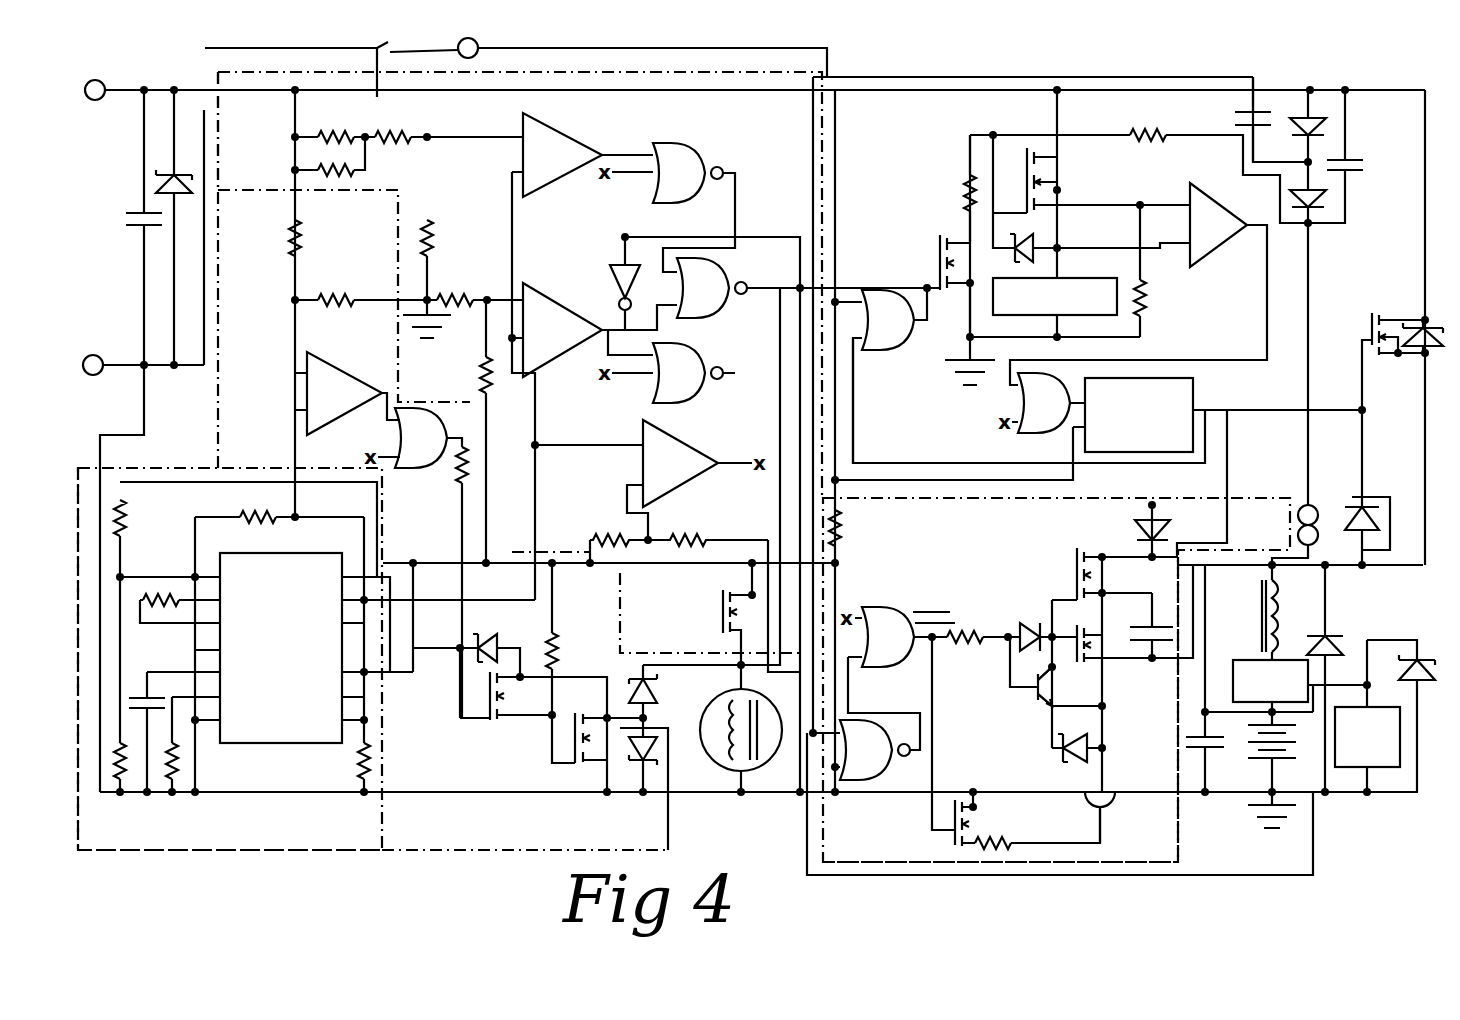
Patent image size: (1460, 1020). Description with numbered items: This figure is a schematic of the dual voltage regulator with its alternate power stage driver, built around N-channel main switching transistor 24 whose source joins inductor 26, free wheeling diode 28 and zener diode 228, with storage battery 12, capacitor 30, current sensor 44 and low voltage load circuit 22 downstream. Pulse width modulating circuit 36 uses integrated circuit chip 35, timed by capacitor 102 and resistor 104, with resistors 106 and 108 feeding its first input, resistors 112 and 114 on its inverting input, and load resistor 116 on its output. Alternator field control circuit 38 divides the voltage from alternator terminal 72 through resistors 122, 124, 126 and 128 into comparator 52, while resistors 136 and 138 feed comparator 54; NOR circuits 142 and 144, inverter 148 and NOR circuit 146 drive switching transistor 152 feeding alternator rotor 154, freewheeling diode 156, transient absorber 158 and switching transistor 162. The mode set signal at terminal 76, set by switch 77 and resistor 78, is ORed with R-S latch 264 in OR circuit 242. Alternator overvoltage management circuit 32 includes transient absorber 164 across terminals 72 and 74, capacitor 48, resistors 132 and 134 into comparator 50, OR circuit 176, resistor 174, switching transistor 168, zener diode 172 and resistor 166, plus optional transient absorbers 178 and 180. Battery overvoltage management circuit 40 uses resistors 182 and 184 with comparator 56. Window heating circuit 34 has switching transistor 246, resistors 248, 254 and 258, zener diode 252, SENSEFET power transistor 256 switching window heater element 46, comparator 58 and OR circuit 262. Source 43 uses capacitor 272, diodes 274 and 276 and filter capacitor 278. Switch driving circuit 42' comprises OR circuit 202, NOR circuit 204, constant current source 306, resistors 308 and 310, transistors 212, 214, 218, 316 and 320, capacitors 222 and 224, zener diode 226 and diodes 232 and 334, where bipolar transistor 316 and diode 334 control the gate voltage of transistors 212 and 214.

The storage battery 12 is at (1262, 757).
The low voltage load circuit 22 is at (1350, 770).
The main switching transistor 24 is at (1395, 366).
The inductor 26 is at (1258, 600).
The free wheeling diode 28 is at (1333, 635).
The capacitor 30 is at (1195, 755).
The alternator overvoltage management circuit 32 is at (562, 553).
The window heating element control and resistance sensing circuit 34 is at (938, 131).
The integrated circuit chip 35 is at (285, 745).
The pulse width modulating circuit 36 is at (372, 848).
The alternator field control circuit 38 is at (215, 74).
The battery overvoltage management circuit 40 is at (778, 466).
The switch driving circuit 42' is at (1041, 709).
The source of direct current 43 is at (1290, 75).
The current sensor 44 is at (1248, 662).
The window heater element 46 is at (1120, 318).
The capacitor 48 is at (133, 228).
The comparator 50 is at (305, 398).
The comparator 52 is at (540, 120).
The comparator 54 is at (540, 285).
The comparator 56 is at (705, 468).
The comparator 58 is at (1225, 195).
The alternator terminal 72 is at (105, 101).
The alternator terminal 74 is at (100, 376).
The mode set terminal 76 is at (478, 58).
The switch 77 is at (372, 98).
The resistor 78 is at (845, 523).
The capacitor 102 is at (178, 748).
The resistor 104 is at (153, 710).
The resistor 106 is at (115, 778).
The resistor 108 is at (124, 512).
The resistor 112 is at (170, 605).
The resistor 114 is at (262, 512).
The resistor 116 is at (368, 770).
The resistor 122 is at (318, 135).
The resistor 124 is at (318, 168).
The resistor 126 is at (410, 135).
The resistor 128 is at (468, 222).
The resistor 132 is at (292, 256).
The resistor 134 is at (340, 298).
The resistor 136 is at (482, 378).
The resistor 138 is at (450, 298).
The NOR circuit 142 is at (660, 143).
The NOR circuit 144 is at (678, 402).
The NOR circuit 146 is at (705, 258).
The inverter 148 is at (620, 263).
The switching transistor 152 is at (722, 615).
The alternator rotor 154 is at (727, 730).
The freewheeling diode 156 is at (645, 672).
The transient absorber 158 is at (655, 762).
The switching transistor 162 is at (572, 765).
The transient absorber 164 is at (185, 195).
The resistor 166 is at (556, 640).
The switching transistor 168 is at (470, 718).
The zener diode 172 is at (480, 645).
The resistor 174 is at (466, 485).
The OR circuit 176 is at (422, 470).
The transient absorber 178 is at (1422, 657).
The transient absorber 180 is at (1422, 318).
The resistor 182 is at (618, 535).
The resistor 184 is at (690, 540).
The OR circuit 202 is at (885, 667).
The NOR circuit 204 is at (895, 790).
The switching transistor 212 is at (1072, 570).
The switching transistor 214 is at (1072, 630).
The switching transistor 218 is at (945, 822).
The level shifting capacitor 222 is at (930, 615).
The capacitor 224 is at (1150, 660).
The zener diode 226 is at (1060, 758).
The zener diode 228 is at (1350, 505).
The diode 232 is at (1135, 545).
The OR circuit 242 is at (900, 350).
The switching transistor 246 is at (945, 240).
The resistor 248 is at (965, 178).
The zener diode 252 is at (1040, 246).
The resistor 254 is at (1150, 132).
The SENSEFET power transistor 256 is at (1040, 172).
The resistor 258 is at (1148, 300).
The OR circuit 262 is at (1030, 433).
The R-S latch 264 is at (1115, 453).
The capacitor 272 is at (1243, 116).
The diode 274 is at (1315, 118).
The diode 276 is at (1322, 195).
The filter capacitor 278 is at (1350, 165).
The constant current source 306 is at (1295, 522).
The resistor 308 is at (962, 640).
The resistor 310 is at (990, 840).
The bipolar transistor 316 is at (1032, 700).
The switching transistor 320 is at (1110, 818).
The diode 334 is at (1020, 625).